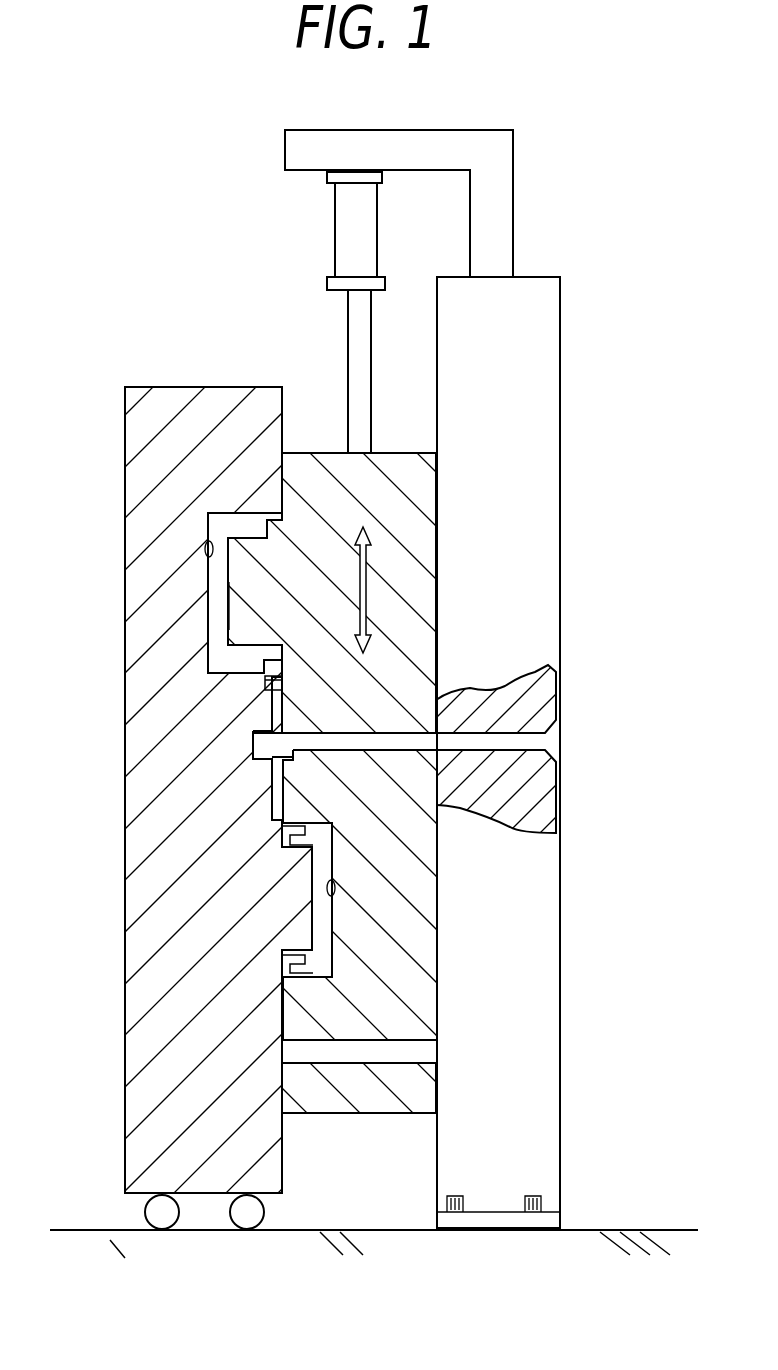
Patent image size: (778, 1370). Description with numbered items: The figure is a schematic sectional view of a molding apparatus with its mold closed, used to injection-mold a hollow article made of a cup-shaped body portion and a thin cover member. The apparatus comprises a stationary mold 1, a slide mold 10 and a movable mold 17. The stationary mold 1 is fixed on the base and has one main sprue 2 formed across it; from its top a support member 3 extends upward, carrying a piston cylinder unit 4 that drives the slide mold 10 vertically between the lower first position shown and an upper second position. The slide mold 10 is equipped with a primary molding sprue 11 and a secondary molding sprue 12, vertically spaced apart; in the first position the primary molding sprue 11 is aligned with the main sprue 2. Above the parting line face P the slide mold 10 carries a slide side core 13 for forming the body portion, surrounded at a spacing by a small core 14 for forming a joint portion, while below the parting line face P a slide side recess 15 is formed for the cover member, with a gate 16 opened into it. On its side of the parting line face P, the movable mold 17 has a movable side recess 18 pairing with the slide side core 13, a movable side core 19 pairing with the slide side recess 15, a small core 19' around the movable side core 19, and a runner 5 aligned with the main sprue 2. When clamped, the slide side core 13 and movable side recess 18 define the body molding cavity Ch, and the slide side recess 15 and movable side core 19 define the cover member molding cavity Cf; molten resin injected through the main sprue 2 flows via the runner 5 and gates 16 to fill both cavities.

The stationary mold 1 is at (553, 300).
The main sprue 2 is at (490, 752).
The support member 3 is at (505, 160).
The piston cylinder unit 4 is at (367, 220).
The runner 5 is at (273, 778).
The slide mold 10 is at (403, 453).
The primary molding sprue 11 is at (375, 750).
The secondary molding sprue 12 is at (282, 1053).
The slide side core 13 is at (257, 588).
The small core 14 is at (282, 663).
The slide side recess 15 is at (333, 882).
The gate 16 is at (276, 680).
The movable mold 17 is at (183, 387).
The movable side recess 18 is at (206, 546).
The movable side core 19 is at (189, 900).
The small core 19' is at (188, 995).
The parting line face P is at (283, 418).
The body molding cavity Ch is at (207, 598).
The cover member molding cavity Cf is at (323, 935).